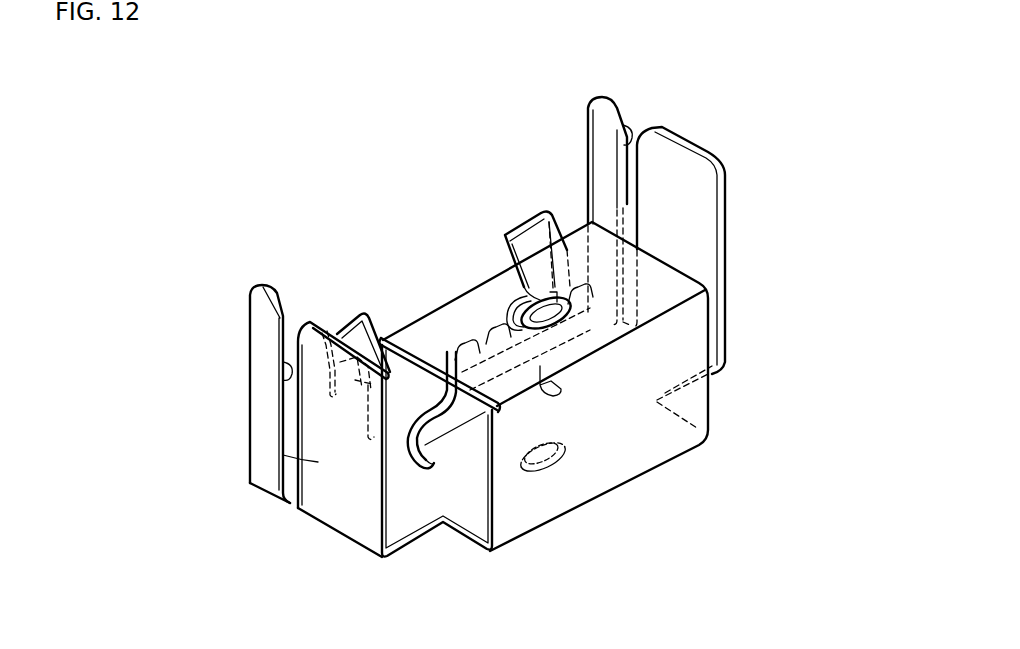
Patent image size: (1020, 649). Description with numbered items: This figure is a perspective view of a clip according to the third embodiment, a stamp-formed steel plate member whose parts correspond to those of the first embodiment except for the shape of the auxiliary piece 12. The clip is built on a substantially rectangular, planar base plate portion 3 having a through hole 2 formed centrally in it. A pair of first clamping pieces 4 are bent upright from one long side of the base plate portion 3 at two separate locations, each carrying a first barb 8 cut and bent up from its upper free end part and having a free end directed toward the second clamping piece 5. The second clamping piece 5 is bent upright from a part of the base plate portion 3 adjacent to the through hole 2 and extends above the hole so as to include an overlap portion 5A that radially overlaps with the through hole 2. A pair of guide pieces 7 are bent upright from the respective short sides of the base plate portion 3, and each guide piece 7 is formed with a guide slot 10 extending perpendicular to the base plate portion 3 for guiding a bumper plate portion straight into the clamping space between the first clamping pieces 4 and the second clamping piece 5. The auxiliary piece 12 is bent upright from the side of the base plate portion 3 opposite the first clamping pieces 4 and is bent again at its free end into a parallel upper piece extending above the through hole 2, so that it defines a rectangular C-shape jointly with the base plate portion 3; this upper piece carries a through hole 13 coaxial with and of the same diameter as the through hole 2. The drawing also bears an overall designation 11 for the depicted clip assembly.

The through hole 2 is at (553, 466).
The base plate portion 3 is at (420, 523).
The first clamping piece 4 is at (542, 217).
The second clamping piece 5 is at (417, 400).
The overlap portion 5A is at (472, 440).
The guide piece 7 is at (256, 293).
The first barb 8 is at (394, 352).
The guide slot 10 is at (283, 365).
The holder assembly 11 is at (454, 214).
The auxiliary piece 12 is at (613, 442).
The through hole 13 is at (520, 313).